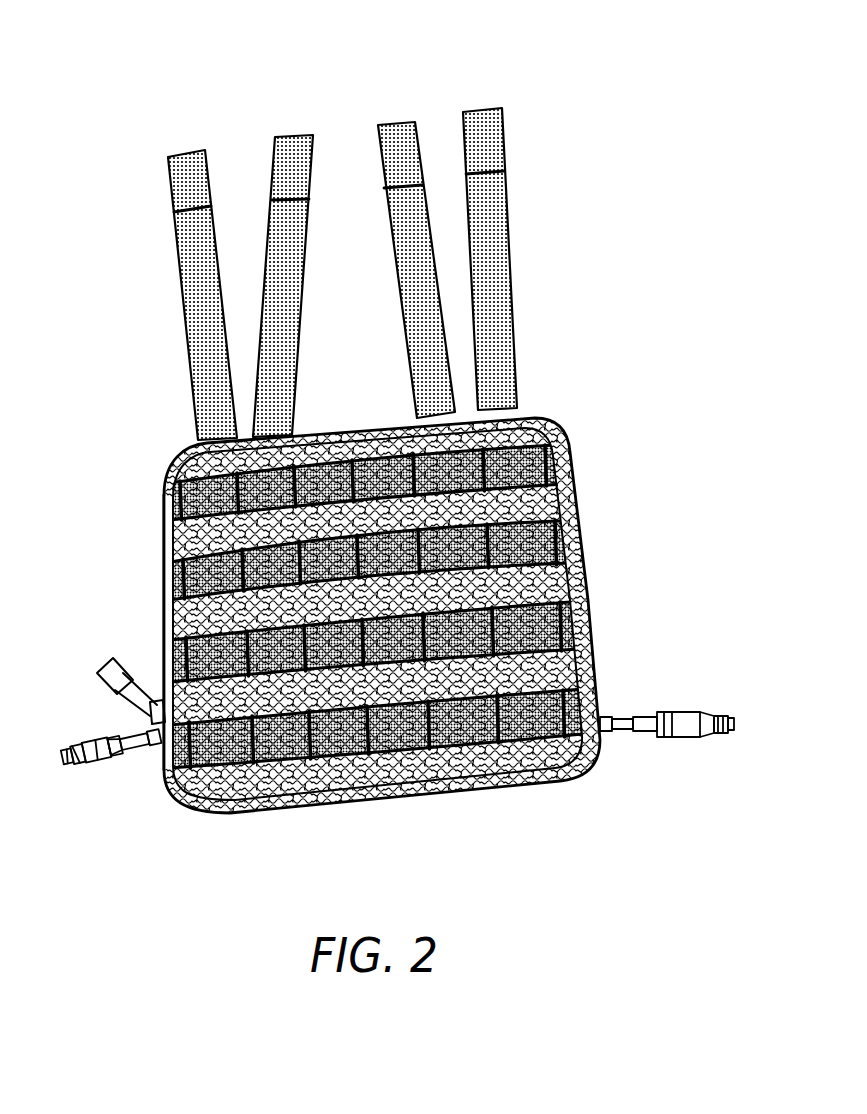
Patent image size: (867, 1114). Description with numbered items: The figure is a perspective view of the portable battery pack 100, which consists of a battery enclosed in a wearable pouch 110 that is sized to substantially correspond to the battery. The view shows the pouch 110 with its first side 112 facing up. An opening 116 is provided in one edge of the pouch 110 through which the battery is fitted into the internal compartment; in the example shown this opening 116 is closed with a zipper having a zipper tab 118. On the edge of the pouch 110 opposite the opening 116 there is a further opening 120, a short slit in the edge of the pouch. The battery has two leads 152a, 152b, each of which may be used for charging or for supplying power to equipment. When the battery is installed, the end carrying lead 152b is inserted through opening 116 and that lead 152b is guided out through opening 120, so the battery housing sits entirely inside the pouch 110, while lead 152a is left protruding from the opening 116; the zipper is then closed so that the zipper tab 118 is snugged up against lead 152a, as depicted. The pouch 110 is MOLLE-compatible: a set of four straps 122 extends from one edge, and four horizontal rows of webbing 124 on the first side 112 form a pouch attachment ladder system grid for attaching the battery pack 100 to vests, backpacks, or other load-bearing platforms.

The portable battery pack 100 is at (274, 60).
The pouch 110 is at (568, 407).
The first side 112 is at (387, 428).
The opening 116 is at (163, 552).
The zipper tab 118 is at (113, 660).
The opening 120 is at (607, 693).
The straps 122 is at (268, 272).
The webbing 124 is at (263, 550).
The lead 152a is at (85, 742).
The lead 152b is at (707, 716).